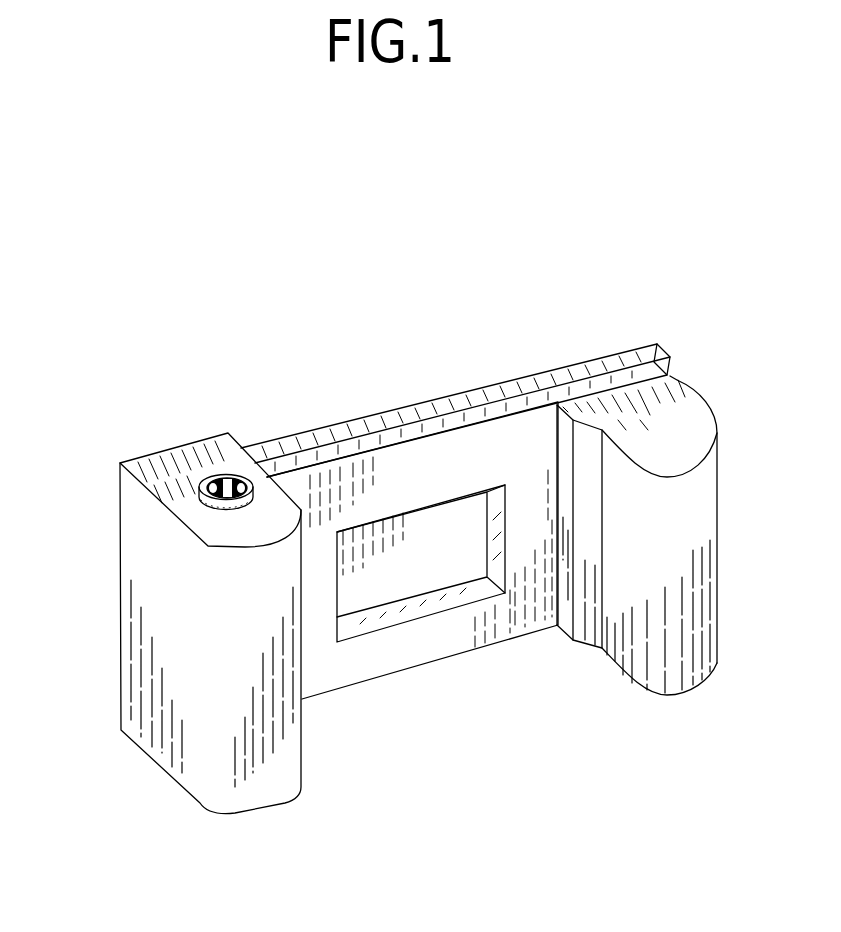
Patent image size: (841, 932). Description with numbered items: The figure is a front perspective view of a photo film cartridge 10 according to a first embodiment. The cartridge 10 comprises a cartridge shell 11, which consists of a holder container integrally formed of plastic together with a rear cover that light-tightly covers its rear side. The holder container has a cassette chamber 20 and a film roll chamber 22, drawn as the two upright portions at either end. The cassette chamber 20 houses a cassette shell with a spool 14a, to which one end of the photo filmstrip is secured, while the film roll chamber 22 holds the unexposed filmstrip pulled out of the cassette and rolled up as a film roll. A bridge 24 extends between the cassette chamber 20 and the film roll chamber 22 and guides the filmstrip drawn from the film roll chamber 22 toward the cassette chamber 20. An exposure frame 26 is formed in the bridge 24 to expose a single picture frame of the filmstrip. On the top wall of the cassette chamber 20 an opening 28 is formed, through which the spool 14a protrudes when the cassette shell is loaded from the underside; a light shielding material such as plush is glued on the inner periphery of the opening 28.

The photo film cartridge 10 is at (368, 360).
The cartridge shell 11 is at (302, 428).
The spool 14a is at (197, 478).
The cassette chamber 20 is at (212, 775).
The film roll chamber 22 is at (676, 674).
The bridge 24 is at (528, 376).
The exposure frame 26 is at (413, 596).
The opening 28 is at (222, 513).